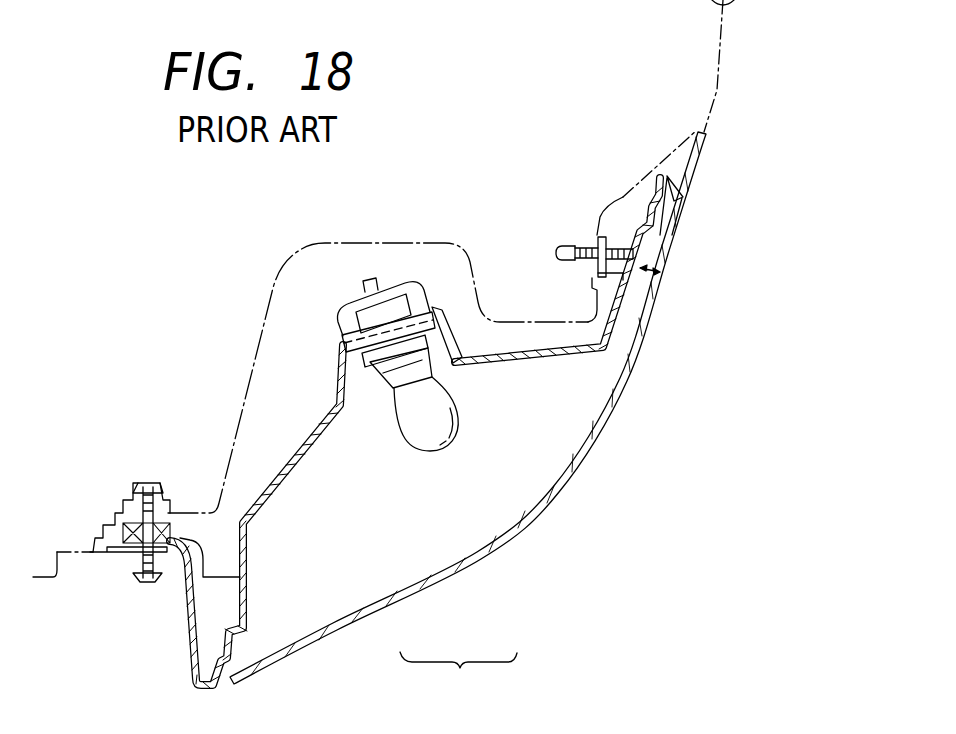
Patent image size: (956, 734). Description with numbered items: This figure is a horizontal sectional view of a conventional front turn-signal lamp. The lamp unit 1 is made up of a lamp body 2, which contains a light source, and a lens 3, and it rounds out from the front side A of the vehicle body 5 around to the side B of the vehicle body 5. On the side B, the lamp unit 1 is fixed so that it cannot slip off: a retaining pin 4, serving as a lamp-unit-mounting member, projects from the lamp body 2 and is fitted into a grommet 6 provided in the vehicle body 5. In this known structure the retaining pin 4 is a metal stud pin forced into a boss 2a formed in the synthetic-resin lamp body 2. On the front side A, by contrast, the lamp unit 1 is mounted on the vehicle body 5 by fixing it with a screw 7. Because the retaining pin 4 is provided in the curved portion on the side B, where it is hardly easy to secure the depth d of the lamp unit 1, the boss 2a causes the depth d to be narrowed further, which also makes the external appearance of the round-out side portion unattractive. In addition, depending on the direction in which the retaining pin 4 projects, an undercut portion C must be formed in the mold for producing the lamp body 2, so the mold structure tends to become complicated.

The lamp unit 1 is at (458, 674).
The lamp body 2 is at (248, 540).
The boss 2a is at (660, 231).
The lens 3 is at (457, 574).
The retaining pin 4 is at (584, 244).
The vehicle body 5 is at (270, 285).
The grommet 6 is at (558, 250).
The screw 7 is at (147, 586).
The front side A is at (88, 573).
The side B is at (724, 89).
The undercut portion C is at (606, 278).
The depth d is at (660, 269).